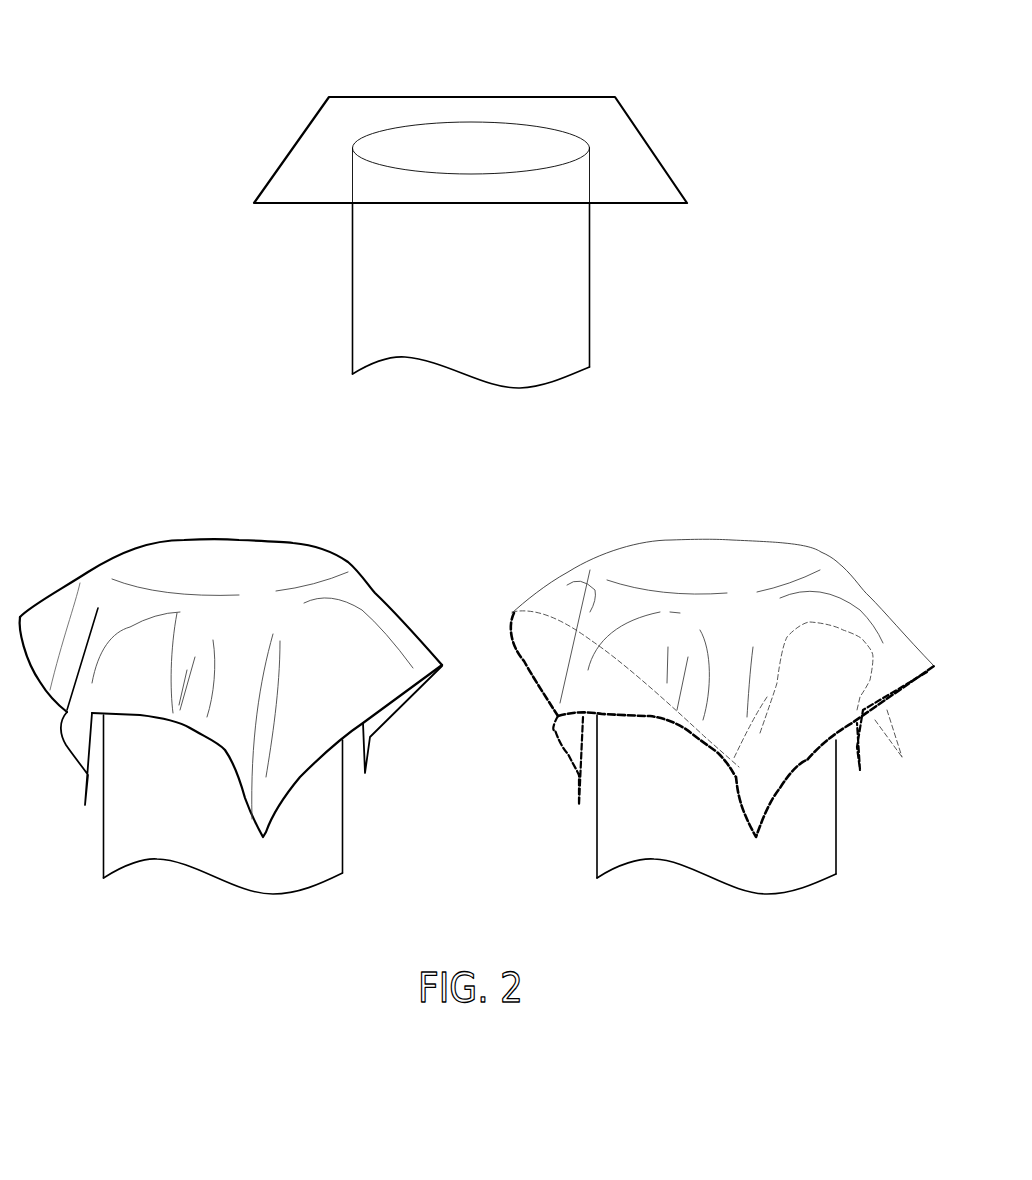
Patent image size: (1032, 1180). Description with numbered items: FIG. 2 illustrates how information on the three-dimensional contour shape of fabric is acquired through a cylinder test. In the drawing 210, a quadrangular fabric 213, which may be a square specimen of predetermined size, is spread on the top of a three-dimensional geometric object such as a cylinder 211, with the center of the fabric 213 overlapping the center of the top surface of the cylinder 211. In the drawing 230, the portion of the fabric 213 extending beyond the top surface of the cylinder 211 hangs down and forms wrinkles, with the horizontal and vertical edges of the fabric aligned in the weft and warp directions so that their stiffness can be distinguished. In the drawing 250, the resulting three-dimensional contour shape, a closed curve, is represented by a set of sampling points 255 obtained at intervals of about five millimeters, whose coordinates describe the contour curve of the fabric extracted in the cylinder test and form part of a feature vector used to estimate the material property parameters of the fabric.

The drawing 210 is at (471, 202).
The cylinder 211 is at (352, 276).
The fabric 213 is at (298, 140).
The drawing 230 is at (329, 520).
The drawing 250 is at (722, 683).
The sampling points 255 is at (841, 705).